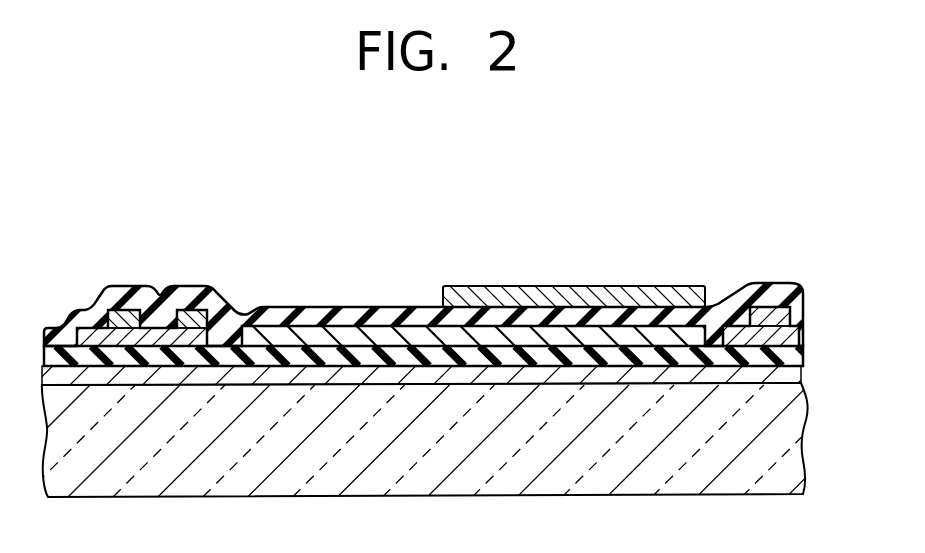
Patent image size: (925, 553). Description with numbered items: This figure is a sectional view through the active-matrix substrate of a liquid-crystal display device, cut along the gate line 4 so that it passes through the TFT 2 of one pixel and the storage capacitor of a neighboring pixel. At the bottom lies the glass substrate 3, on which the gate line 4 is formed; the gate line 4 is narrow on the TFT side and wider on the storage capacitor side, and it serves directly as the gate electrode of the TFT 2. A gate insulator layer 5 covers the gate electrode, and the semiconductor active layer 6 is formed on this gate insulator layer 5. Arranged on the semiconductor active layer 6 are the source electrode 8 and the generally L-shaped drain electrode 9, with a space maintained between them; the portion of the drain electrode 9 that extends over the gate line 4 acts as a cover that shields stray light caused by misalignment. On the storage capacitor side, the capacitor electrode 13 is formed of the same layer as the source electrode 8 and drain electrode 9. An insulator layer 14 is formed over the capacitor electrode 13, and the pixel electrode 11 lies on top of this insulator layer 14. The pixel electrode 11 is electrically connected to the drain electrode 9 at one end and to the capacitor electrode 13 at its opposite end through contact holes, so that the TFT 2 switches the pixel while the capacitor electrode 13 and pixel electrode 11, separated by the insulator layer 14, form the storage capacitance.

The TFT 2 is at (143, 249).
The glass substrate 3 is at (790, 420).
The gate line 4 is at (790, 370).
The gate insulator layer 5 is at (790, 352).
The semiconductor active layer 6 is at (152, 338).
The source electrode 8 is at (120, 323).
The drain electrode 9 is at (200, 325).
The pixel electrode 11 is at (541, 296).
The capacitor electrode 13 is at (395, 337).
The insulator layer 14 is at (313, 318).